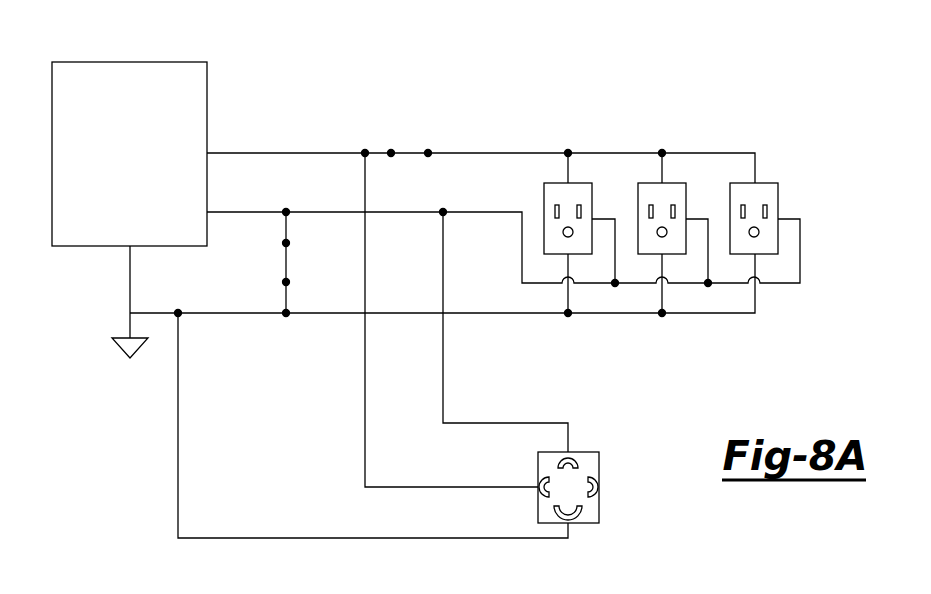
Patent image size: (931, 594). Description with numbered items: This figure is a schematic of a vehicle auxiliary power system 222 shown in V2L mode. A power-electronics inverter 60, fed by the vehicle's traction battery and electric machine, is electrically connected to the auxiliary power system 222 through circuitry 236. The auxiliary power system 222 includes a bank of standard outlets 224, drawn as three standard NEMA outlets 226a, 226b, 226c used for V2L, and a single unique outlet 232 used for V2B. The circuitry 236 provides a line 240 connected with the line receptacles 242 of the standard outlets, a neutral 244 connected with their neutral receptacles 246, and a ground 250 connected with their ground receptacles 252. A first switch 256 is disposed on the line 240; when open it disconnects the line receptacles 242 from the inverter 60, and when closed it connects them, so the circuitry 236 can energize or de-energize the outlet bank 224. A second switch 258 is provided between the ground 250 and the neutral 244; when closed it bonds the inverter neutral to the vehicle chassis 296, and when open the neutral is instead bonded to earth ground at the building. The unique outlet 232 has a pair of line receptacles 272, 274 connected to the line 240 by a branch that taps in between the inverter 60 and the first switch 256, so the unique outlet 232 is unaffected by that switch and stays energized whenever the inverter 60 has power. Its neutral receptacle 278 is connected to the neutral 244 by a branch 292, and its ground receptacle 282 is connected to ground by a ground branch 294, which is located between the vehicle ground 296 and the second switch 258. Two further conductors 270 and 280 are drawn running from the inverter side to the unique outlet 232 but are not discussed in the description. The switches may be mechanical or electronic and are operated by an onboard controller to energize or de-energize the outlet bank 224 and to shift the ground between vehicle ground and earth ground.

The power-electronics inverter 60 is at (130, 62).
The auxiliary power system 222 is at (679, 150).
The bank of standard outlets 224 is at (794, 180).
The outlet 226a is at (565, 185).
The outlet 226b is at (672, 183).
The outlet 226c is at (794, 213).
The unique outlet 232 is at (574, 480).
The circuitry 236 is at (454, 87).
The line 240 is at (288, 153).
The line receptacles 242 is at (555, 212).
The neutral 244 is at (392, 212).
The neutral receptacles 246 is at (581, 212).
The ground 250 is at (470, 318).
The ground receptacles 252 is at (760, 232).
The first switch 256 is at (433, 138).
The second switch 258 is at (301, 270).
The conductor 270 is at (365, 448).
The line receptacle 272 is at (600, 485).
The line receptacle 274 is at (538, 482).
The neutral receptacle 278 is at (572, 455).
The conductor 280 is at (383, 538).
The ground receptacle 282 is at (572, 518).
The branch 292 is at (477, 423).
The ground branch 294 is at (243, 538).
The vehicle chassis 296 is at (115, 345).